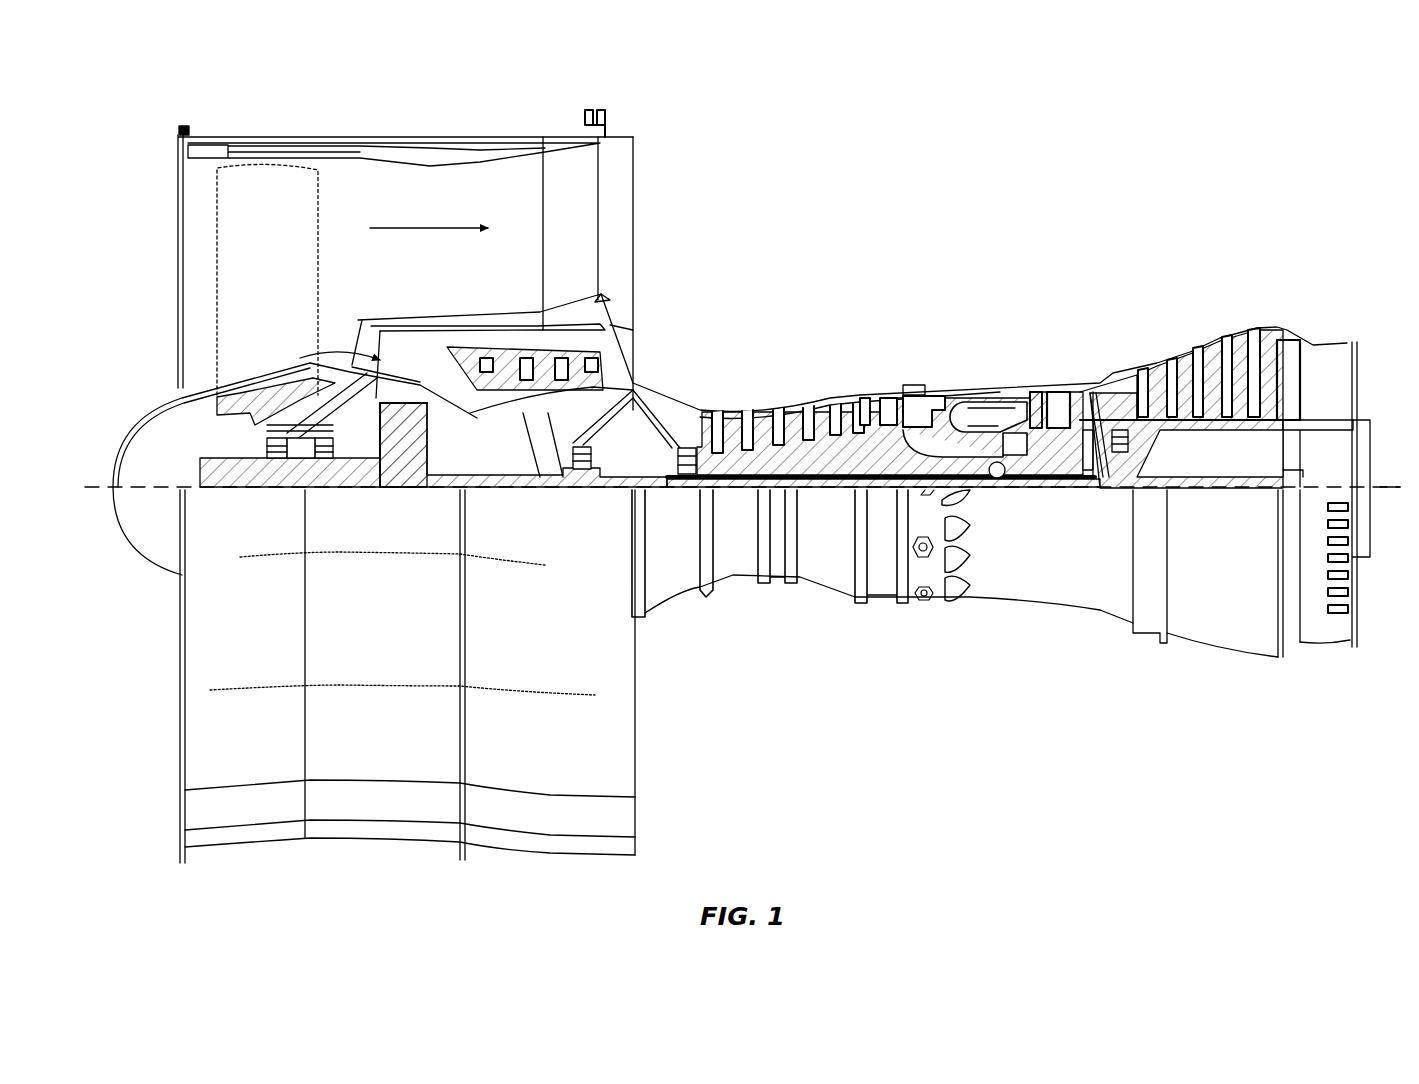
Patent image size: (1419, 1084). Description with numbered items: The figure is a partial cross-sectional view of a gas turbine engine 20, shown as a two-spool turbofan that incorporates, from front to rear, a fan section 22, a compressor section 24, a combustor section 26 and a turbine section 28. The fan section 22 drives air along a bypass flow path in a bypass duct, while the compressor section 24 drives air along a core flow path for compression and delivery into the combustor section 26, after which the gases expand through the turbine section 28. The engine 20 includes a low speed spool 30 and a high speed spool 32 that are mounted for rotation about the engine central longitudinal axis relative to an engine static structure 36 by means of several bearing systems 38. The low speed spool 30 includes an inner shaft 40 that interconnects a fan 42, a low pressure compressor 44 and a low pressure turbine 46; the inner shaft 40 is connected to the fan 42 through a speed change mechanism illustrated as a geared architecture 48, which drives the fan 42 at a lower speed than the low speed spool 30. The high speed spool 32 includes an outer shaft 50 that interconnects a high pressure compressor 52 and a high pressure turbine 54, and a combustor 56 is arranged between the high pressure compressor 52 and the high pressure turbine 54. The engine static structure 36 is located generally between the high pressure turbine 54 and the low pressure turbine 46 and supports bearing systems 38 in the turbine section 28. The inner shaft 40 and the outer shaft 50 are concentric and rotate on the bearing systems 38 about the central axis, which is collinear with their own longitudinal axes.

The gas turbine engine 20 is at (1232, 146).
The fan section 22 is at (290, 130).
The compressor section 24 is at (800, 303).
The combustor section 26 is at (992, 282).
The turbine section 28 is at (1140, 275).
The low speed spool 30 is at (845, 488).
The high speed spool 32 is at (905, 440).
The engine static structure 36 is at (885, 602).
The bearing systems 38 is at (278, 447).
The inner shaft 40 is at (652, 488).
The fan 42 is at (278, 276).
The low pressure compressor 44 is at (555, 365).
The low pressure turbine 46 is at (1212, 352).
The geared architecture 48 is at (403, 470).
The outer shaft 50 is at (1000, 480).
The high pressure compressor 52 is at (795, 447).
The high pressure turbine 54 is at (1058, 390).
The combustor 56 is at (975, 410).